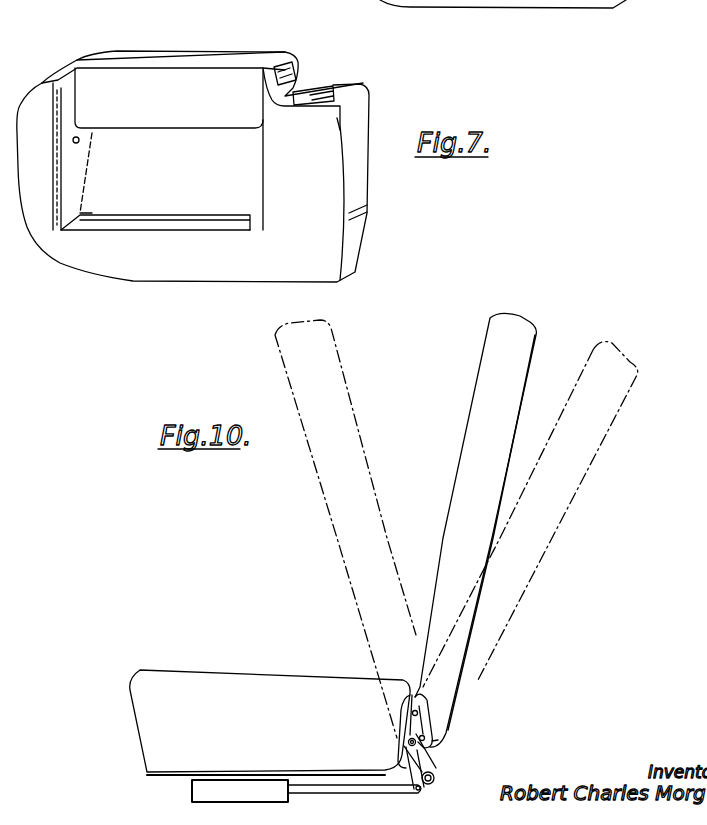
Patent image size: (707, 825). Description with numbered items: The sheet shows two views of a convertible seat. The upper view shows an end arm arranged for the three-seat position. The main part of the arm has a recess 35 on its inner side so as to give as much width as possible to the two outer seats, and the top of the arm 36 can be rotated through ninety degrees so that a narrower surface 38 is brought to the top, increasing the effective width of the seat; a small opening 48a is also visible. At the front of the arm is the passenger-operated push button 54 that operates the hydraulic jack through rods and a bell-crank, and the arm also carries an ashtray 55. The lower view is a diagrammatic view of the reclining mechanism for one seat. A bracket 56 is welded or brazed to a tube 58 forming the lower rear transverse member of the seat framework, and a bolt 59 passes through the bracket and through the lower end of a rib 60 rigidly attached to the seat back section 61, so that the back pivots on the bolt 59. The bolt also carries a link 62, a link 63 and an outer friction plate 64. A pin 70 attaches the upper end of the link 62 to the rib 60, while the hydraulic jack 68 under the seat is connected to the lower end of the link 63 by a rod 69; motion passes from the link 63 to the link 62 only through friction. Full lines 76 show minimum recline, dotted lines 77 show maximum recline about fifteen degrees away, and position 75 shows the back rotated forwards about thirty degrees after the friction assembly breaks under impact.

In FIG. 7, the recess 35 is at (118, 202).
In FIG. 7, the top of the arm 36 is at (108, 88).
In FIG. 7, the narrower surface 38 is at (222, 57).
In FIG. 7, the aperture 48a is at (80, 141).
In FIG. 7, the push button 54 is at (292, 70).
In FIG. 7, the ashtray 55 is at (322, 91).
In FIG. 10, the bracket 56 is at (430, 766).
In FIG. 10, the tube 58 is at (430, 785).
In FIG. 10, the bolt 59 is at (404, 748).
In FIG. 10, the rib 60 is at (412, 728).
In FIG. 10, the seat back section 61 is at (439, 740).
In FIG. 10, the link 62 is at (420, 726).
In FIG. 10, the link 63 is at (407, 775).
In FIG. 10, the outer friction plate 64 is at (407, 692).
In FIG. 10, the hydraulic jack 68 is at (198, 789).
In FIG. 10, the rod 69 is at (333, 788).
In FIG. 10, the pin 70 is at (418, 714).
In FIG. 10, the forward position 75 is at (308, 444).
In FIG. 10, the full lines 76 is at (513, 318).
In FIG. 10, the dotted lines 77 is at (614, 351).